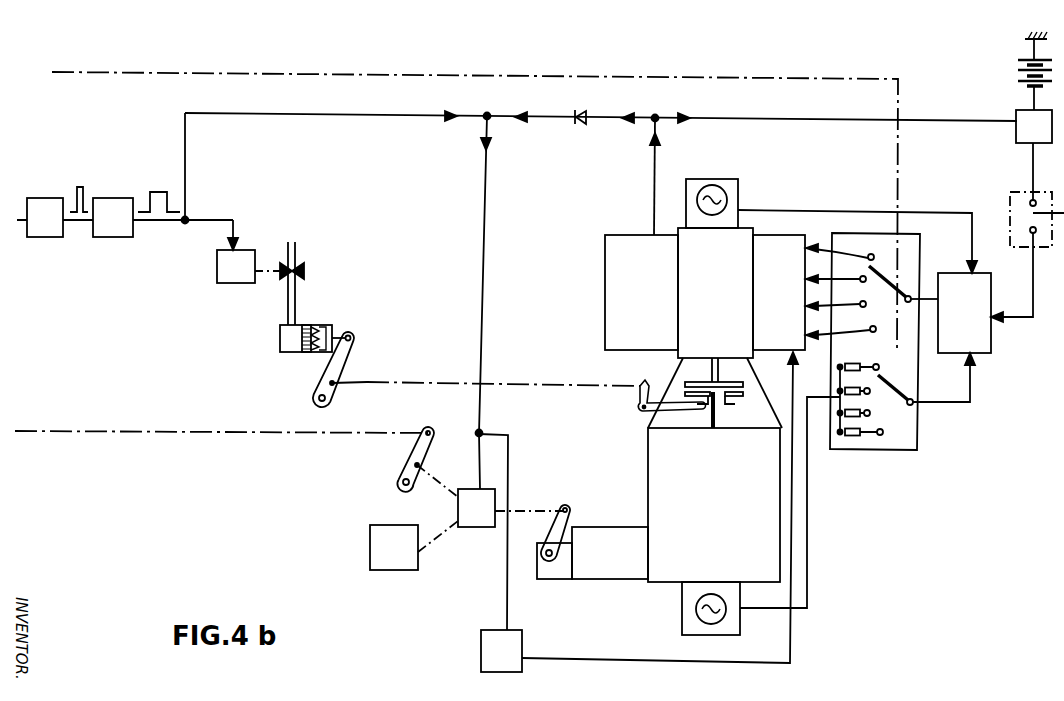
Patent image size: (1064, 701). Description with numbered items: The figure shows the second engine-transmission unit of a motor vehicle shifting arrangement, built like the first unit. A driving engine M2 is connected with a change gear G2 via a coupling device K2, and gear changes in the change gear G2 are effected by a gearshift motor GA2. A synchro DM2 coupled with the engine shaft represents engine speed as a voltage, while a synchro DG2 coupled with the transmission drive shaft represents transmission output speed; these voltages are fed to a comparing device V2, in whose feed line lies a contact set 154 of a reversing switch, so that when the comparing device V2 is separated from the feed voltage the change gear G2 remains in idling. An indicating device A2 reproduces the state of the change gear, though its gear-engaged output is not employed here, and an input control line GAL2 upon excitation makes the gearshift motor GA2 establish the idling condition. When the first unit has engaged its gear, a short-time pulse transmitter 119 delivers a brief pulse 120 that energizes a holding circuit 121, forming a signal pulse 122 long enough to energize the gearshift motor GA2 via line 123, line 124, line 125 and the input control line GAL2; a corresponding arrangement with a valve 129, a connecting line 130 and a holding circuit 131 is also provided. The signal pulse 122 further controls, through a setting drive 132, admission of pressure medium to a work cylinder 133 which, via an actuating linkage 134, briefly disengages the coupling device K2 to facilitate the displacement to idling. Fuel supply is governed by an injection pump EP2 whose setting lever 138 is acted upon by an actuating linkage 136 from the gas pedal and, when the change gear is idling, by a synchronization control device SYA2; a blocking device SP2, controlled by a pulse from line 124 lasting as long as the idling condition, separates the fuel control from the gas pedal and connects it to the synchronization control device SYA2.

The short-time pulse transmitter 119 is at (46, 205).
The brief pulse 120 is at (84, 193).
The holding circuit 121 is at (112, 232).
The signal pulse 122 is at (167, 195).
The line 123 is at (364, 124).
The line 124 is at (481, 290).
The line 125 is at (508, 608).
The valve 129 is at (581, 127).
The connecting line 130 is at (533, 120).
The holding circuit 131 is at (487, 652).
The setting drive 132 is at (234, 277).
The work cylinder 133 is at (313, 323).
The actuating linkage 134 is at (367, 382).
The actuating linkage 136 is at (119, 434).
The setting lever 138 is at (551, 527).
The contact set 154 is at (1010, 195).
The synchronization control device SYA2 is at (360, 547).
The blocking device SP2 is at (475, 521).
The injection pump EP2 is at (610, 538).
The driving engine M2 is at (714, 505).
The synchro DM2 is at (683, 608).
The input control line GAL2 is at (790, 647).
The indicating device A2 is at (641, 292).
The change gear G2 is at (715, 293).
The gearshift motor GA2 is at (779, 292).
The synchro DG2 is at (712, 189).
The coupling device K2 is at (757, 409).
The comparing device V2 is at (964, 313).